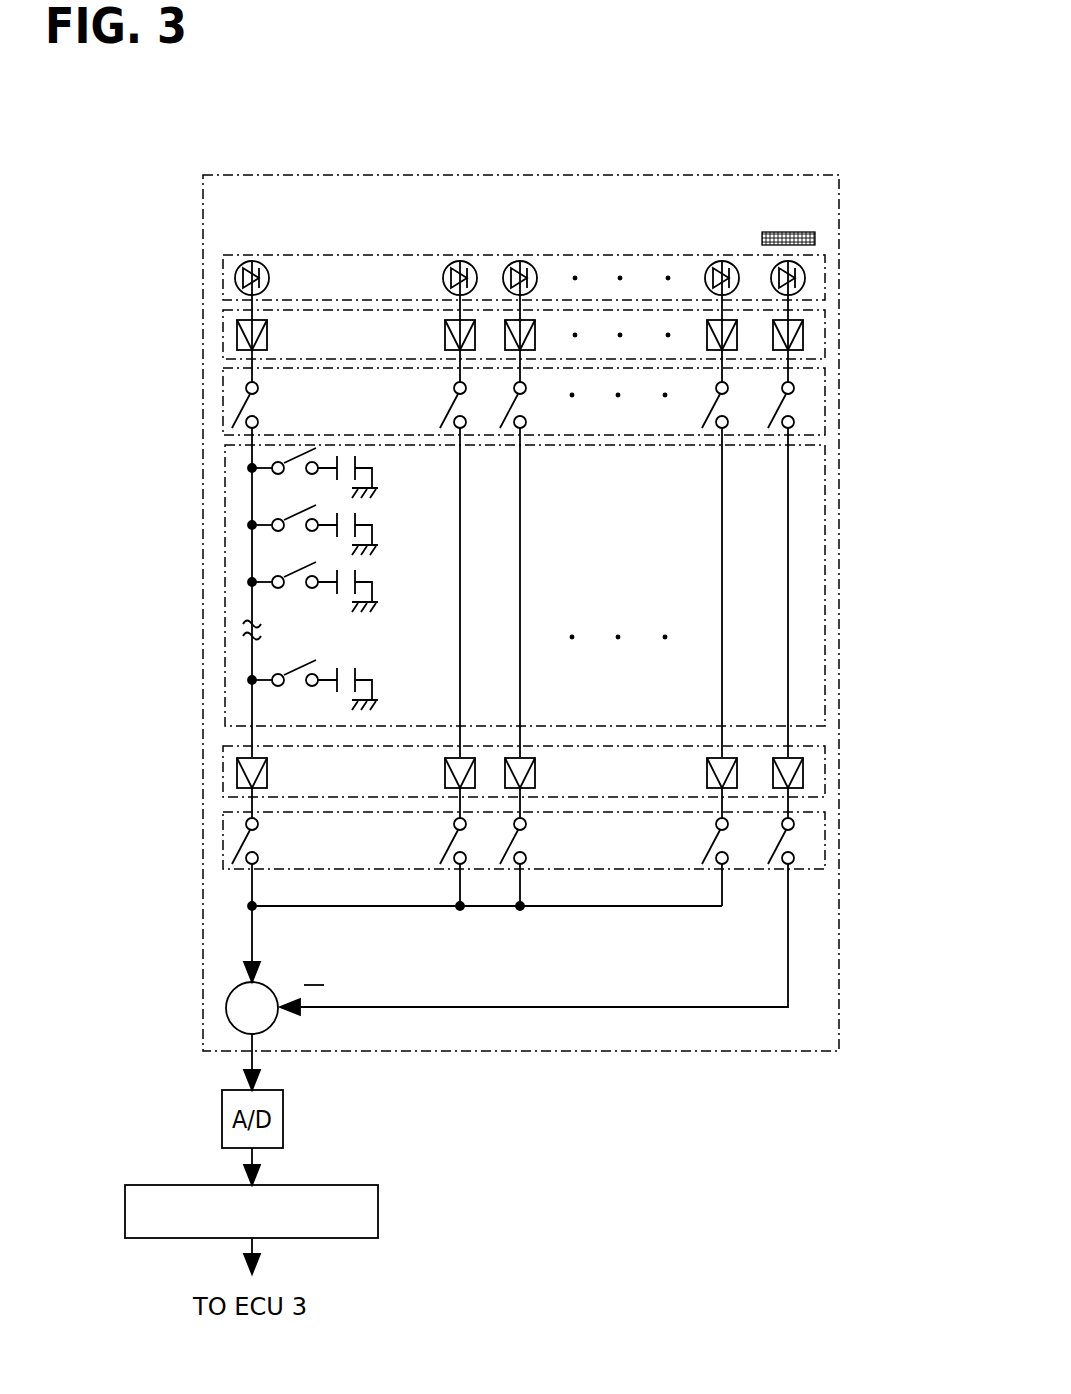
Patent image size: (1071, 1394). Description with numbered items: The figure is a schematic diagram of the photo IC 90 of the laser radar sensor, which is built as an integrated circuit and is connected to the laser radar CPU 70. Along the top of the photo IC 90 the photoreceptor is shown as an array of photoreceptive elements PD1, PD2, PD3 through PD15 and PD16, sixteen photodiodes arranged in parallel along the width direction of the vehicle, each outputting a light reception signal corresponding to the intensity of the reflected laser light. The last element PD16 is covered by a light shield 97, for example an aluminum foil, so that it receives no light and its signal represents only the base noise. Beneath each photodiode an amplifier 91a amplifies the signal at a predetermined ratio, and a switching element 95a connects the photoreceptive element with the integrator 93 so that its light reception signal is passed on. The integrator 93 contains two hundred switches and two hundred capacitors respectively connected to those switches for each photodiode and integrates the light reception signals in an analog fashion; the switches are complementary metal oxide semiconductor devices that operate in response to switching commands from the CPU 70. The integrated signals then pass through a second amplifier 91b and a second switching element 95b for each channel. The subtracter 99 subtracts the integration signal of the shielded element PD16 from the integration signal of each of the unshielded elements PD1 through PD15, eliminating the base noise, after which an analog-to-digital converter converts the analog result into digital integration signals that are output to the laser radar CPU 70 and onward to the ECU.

The photo IC 90 is at (840, 608).
The integrator 93 is at (828, 580).
The amplifier 91a is at (828, 340).
The amplifier 91b is at (828, 770).
The switching element 95a is at (828, 404).
The switching element 95b is at (828, 838).
The light shield 97 is at (816, 238).
The subtracter 99 is at (226, 1007).
The laser radar CPU 70 is at (379, 1210).
The photoreceptive element PD1 is at (250, 257).
The photoreceptive element PD2 is at (462, 257).
The photoreceptive element PD3 is at (522, 257).
The photoreceptive element PD15 is at (722, 257).
The photoreceptive element PD16 is at (806, 276).